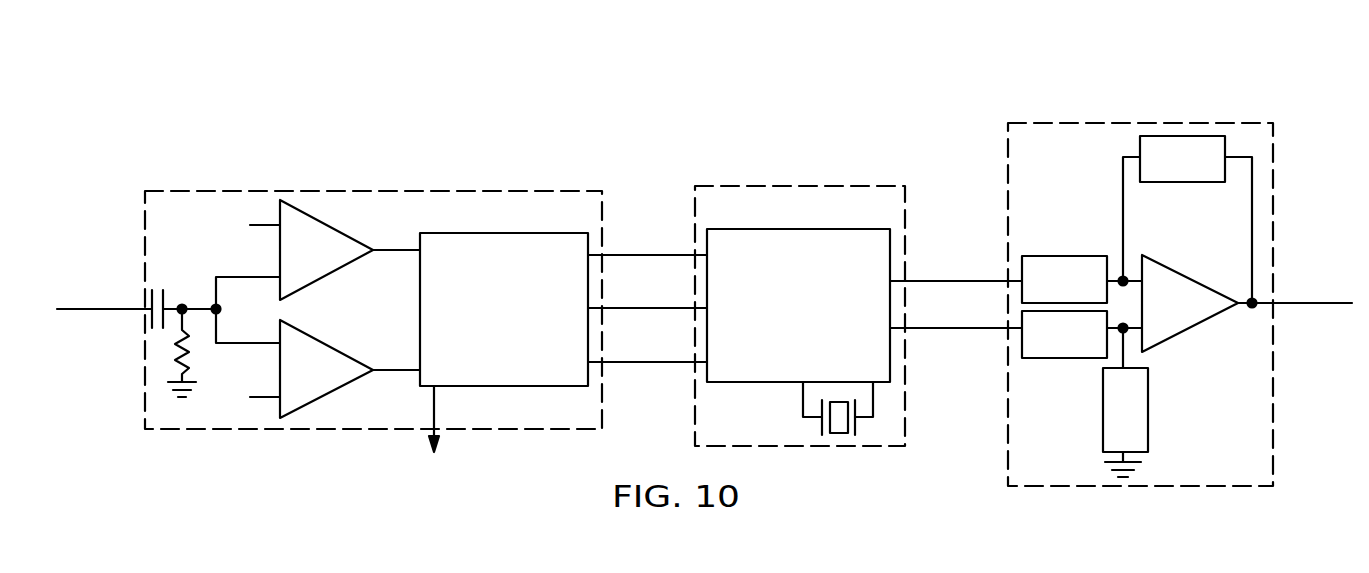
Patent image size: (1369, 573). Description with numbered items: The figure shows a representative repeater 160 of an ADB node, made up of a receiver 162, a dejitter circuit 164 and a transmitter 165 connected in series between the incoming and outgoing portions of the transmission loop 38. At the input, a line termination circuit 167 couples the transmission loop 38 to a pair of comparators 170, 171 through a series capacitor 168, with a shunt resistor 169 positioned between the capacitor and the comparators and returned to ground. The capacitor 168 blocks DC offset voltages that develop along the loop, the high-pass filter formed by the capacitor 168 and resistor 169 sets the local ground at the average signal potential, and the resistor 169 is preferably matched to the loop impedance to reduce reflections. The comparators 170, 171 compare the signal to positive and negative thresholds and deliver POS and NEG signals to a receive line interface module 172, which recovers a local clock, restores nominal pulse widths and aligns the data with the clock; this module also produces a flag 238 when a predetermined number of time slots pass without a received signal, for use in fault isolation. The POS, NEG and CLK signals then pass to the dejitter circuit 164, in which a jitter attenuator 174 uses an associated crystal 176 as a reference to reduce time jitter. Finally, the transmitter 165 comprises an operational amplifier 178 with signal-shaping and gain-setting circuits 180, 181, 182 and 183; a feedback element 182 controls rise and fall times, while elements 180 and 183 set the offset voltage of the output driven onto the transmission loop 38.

The repeater 160 is at (535, 133).
The transmission loop 38 is at (85, 311).
The receiver 162 is at (378, 190).
The line termination circuit 167 is at (131, 281).
The series capacitor 168 is at (179, 295).
The shunt resistor 169 is at (203, 353).
The comparator 170 is at (318, 250).
The comparator 171 is at (321, 369).
The receive line interface module 172 is at (540, 386).
The flag 238 is at (433, 433).
The dejitter circuit 164 is at (752, 186).
The jitter attenuator 174 is at (740, 382).
The crystal 176 is at (840, 435).
The transmitter 165 is at (1233, 486).
The signal-shaping and gain-setting circuit 181 is at (1082, 279).
The signal-shaping and gain-setting circuit 180 is at (1082, 334).
The operational amplifier 178 is at (1199, 303).
The signal-shaping and gain-setting circuit 182 is at (1187, 219).
The signal-shaping and gain-setting circuit 183 is at (1103, 401).